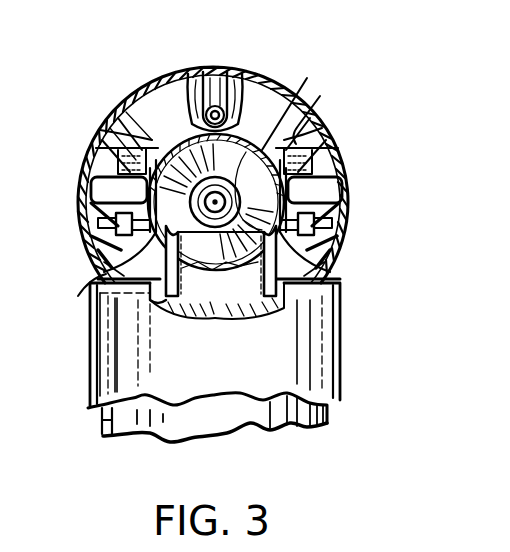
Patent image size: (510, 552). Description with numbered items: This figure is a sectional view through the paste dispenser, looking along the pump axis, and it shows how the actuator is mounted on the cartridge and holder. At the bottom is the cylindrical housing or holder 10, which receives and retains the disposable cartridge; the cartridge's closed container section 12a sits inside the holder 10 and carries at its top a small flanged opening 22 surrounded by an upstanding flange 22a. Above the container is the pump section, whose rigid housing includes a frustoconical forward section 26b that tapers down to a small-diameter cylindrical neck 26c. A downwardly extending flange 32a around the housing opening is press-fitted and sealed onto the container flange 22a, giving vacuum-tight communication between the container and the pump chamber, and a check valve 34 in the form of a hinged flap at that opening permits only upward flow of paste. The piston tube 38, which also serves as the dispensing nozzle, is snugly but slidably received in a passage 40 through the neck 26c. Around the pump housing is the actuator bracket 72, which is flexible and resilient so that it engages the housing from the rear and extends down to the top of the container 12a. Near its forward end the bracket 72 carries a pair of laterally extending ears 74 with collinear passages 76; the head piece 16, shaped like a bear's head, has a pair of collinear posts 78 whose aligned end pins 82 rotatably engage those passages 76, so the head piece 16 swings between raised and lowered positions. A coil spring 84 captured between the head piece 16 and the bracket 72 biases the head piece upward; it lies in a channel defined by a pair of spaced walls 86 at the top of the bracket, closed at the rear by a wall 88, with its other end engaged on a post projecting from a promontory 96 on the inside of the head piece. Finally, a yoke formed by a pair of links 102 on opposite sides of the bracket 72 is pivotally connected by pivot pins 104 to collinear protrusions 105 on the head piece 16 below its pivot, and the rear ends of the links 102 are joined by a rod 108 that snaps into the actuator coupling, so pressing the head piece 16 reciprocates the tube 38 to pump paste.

The housing or holder 10 is at (90, 352).
The container section 12a is at (102, 422).
The head piece 16 is at (140, 92).
The flanged opening 22 is at (170, 302).
The flange 22a is at (208, 320).
The frustoconical forward section 26b is at (320, 96).
The cylindrical neck 26c is at (284, 101).
The downwardly extending flange 32a is at (270, 320).
The check valve 34 is at (221, 261).
The tube 38 is at (294, 192).
The passage 40 is at (230, 190).
The bracket 72 is at (90, 194).
The ears 74 is at (118, 118).
The passages 76 is at (92, 150).
The posts 78 is at (102, 132).
The end pins 82 is at (100, 160).
The coil spring 84 is at (192, 122).
The walls 86 is at (186, 78).
The wall 88 is at (199, 64).
The promontory 96 is at (226, 66).
The links 102 is at (100, 262).
The pivot pins 104 is at (96, 234).
The protrusions 105 is at (84, 220).
The rod 108 is at (96, 280).